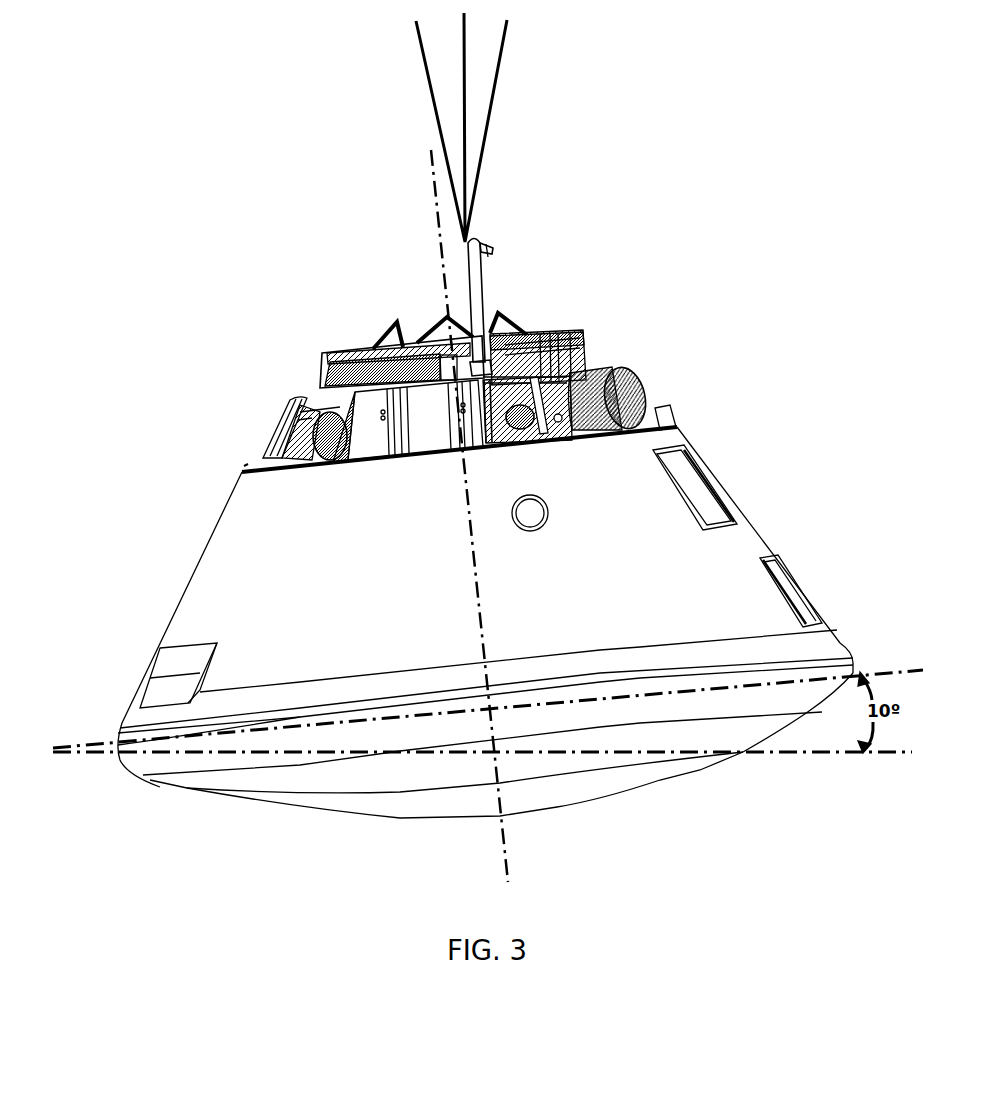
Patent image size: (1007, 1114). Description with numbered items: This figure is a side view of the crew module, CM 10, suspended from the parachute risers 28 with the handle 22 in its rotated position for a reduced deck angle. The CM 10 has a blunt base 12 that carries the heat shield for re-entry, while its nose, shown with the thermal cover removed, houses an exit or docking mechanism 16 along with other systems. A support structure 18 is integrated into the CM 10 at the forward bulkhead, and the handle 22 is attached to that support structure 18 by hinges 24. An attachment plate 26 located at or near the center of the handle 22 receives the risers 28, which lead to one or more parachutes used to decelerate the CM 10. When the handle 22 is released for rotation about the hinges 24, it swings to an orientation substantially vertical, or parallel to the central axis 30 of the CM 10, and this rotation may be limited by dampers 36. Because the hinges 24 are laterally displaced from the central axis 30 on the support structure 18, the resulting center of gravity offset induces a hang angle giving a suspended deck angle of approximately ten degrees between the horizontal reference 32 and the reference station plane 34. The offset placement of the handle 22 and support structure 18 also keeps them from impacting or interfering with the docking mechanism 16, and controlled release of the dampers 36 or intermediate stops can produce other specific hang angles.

The CM 10 is at (703, 595).
The blunt base 12 is at (557, 807).
The docking mechanism 16 is at (443, 320).
The support structure 18 is at (487, 343).
The handle 22 is at (485, 290).
The hinges 24 is at (530, 340).
The attachment plate 26 is at (480, 240).
The risers 28 is at (488, 123).
The central axis 30 is at (440, 260).
The horizontal reference 32 is at (758, 753).
The reference station plane 34 is at (890, 673).
The dampers 36 is at (480, 370).